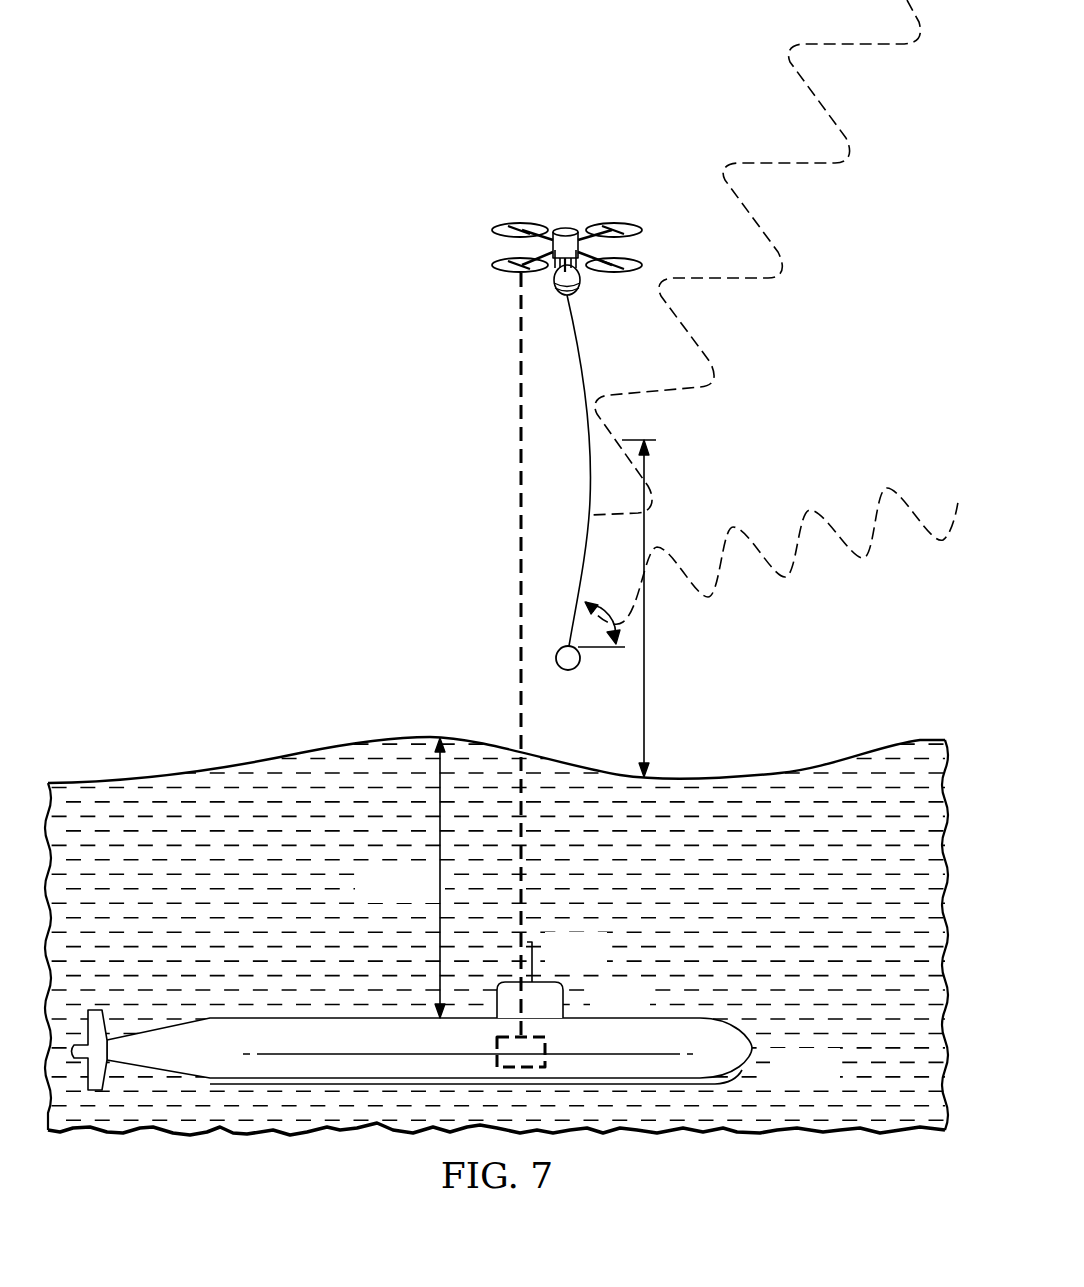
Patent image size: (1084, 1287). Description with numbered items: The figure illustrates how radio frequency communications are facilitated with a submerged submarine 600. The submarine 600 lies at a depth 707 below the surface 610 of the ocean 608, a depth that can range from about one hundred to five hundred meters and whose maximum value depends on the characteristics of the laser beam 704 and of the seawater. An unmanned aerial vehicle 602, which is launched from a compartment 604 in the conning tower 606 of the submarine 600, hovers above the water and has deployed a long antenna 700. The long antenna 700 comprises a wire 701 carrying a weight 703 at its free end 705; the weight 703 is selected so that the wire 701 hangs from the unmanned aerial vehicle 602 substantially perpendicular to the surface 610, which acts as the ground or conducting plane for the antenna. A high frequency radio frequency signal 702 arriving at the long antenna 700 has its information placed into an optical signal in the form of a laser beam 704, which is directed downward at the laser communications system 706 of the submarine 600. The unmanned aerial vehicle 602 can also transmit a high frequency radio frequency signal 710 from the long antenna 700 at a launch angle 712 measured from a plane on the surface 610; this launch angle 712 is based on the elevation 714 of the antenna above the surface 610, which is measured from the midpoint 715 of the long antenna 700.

The submarine 600 is at (752, 1050).
The unmanned aerial vehicle 602 is at (566, 228).
The compartment 604 is at (538, 982).
The conning tower 606 is at (565, 1003).
The ocean 608 is at (258, 770).
The surface 610 is at (148, 776).
The long antenna 700 is at (548, 378).
The wire 701 is at (578, 465).
The high frequency radio frequency signal 702 is at (778, 257).
The weight 703 is at (570, 672).
The laser beam 704 is at (521, 397).
The free end 705 is at (567, 645).
The laser communications system 706 is at (605, 1084).
The depth 707 is at (440, 881).
The high frequency radio frequency signal 710 is at (886, 492).
The launch angle 712 is at (598, 630).
The elevation 714 is at (644, 467).
The midpoint 715 is at (588, 440).